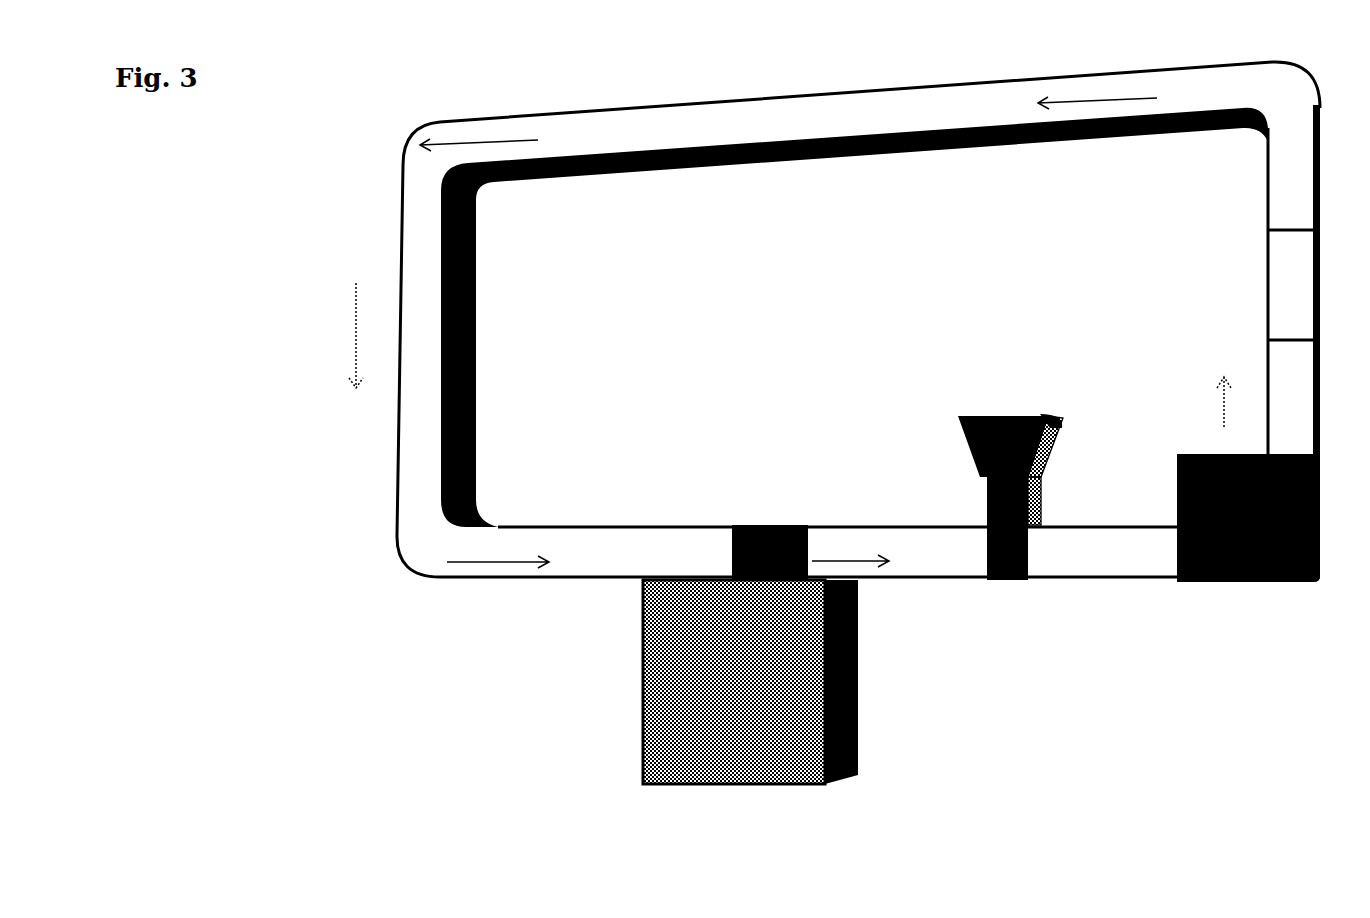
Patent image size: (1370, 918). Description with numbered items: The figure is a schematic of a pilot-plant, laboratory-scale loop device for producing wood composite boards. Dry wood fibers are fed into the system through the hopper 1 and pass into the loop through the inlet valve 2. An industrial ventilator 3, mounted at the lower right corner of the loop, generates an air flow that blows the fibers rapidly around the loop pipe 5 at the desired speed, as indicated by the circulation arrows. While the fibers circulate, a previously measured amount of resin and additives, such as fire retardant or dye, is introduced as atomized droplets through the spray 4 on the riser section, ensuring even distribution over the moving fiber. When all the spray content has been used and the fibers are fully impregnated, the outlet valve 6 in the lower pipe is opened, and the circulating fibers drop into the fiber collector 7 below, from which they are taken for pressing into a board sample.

The hopper 1 is at (995, 497).
The inlet valve 2 is at (880, 553).
The industrial ventilator 3 is at (1245, 518).
The spray 4 is at (1264, 282).
The loop pipe 5 is at (861, 294).
The outlet valve 6 is at (750, 552).
The fiber collector 7 is at (750, 682).